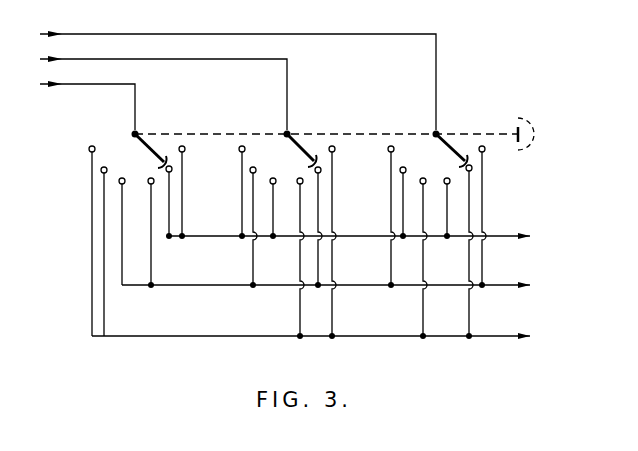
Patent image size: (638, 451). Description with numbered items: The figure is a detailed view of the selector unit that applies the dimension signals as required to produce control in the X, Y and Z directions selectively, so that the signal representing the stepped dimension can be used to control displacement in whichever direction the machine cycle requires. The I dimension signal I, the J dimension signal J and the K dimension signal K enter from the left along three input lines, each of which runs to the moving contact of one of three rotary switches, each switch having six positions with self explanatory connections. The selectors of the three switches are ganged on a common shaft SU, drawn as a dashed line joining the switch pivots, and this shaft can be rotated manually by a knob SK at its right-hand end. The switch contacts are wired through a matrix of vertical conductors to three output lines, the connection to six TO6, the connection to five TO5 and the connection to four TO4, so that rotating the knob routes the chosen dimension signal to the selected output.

The I dimension signal I is at (235, 78).
The J dimension signal J is at (158, 88).
The K dimension signal K is at (82, 103).
The common shaft SU is at (369, 134).
The knob SK is at (536, 134).
The output connection to 6 TO6 is at (365, 236).
The output connection to 5 TO5 is at (342, 285).
The output connection to 4 TO4 is at (327, 336).